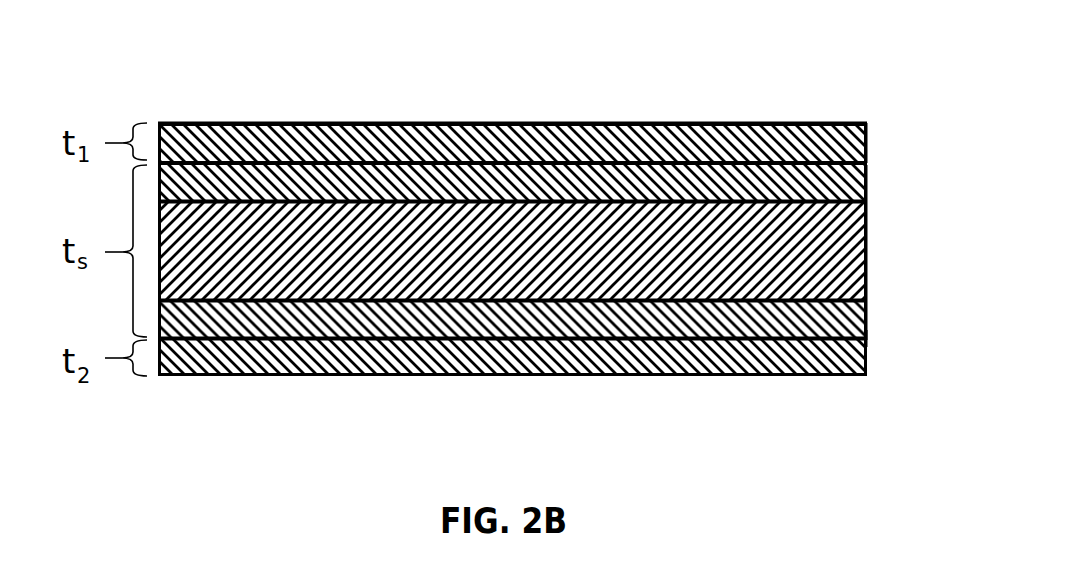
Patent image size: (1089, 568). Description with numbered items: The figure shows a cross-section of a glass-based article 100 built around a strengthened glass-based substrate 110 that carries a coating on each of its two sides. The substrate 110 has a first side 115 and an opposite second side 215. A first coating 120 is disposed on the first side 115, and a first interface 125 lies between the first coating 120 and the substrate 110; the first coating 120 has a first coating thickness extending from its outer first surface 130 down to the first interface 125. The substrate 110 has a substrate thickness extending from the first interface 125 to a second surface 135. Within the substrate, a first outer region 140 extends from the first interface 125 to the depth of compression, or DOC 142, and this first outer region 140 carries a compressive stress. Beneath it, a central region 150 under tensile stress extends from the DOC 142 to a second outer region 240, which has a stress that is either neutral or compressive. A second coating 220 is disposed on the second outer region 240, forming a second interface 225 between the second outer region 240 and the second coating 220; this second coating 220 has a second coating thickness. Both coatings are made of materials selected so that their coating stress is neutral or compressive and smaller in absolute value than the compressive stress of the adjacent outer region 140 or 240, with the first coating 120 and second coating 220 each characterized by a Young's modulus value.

The glass-based article 100 is at (248, 100).
The glass-based substrate 110 is at (900, 217).
The first side 115 is at (380, 160).
The first coating 120 is at (525, 136).
The first interface 125 is at (872, 153).
The first surface 130 is at (752, 129).
The second surface 135 is at (248, 302).
The first outer region 140 is at (857, 177).
The DOC 142 is at (650, 203).
The central region 150 is at (330, 287).
The second side 215 is at (403, 345).
The second coating 220 is at (765, 350).
The second interface 225 is at (882, 339).
The second outer region 240 is at (514, 302).